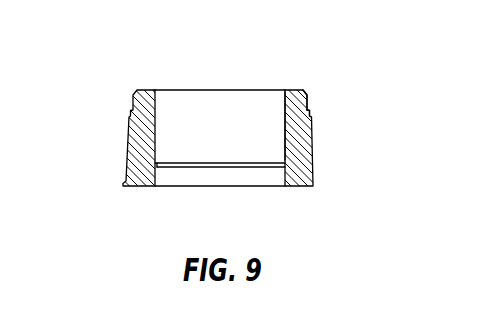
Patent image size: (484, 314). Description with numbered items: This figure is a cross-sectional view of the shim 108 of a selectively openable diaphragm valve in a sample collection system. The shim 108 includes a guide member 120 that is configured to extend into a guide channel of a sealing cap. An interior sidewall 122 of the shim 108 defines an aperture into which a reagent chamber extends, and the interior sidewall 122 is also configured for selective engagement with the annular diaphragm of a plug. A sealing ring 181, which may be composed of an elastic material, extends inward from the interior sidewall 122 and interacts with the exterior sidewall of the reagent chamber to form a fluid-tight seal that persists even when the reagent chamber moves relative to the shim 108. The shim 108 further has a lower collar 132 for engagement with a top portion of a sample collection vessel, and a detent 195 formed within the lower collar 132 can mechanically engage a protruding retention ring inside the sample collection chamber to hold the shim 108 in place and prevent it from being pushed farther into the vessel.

The shim 108 is at (102, 67).
The guide member 120 is at (314, 185).
The interior sidewall 122 is at (285, 111).
The lower collar 132 is at (313, 100).
The detent 195 is at (313, 113).
The sealing ring 181 is at (262, 164).